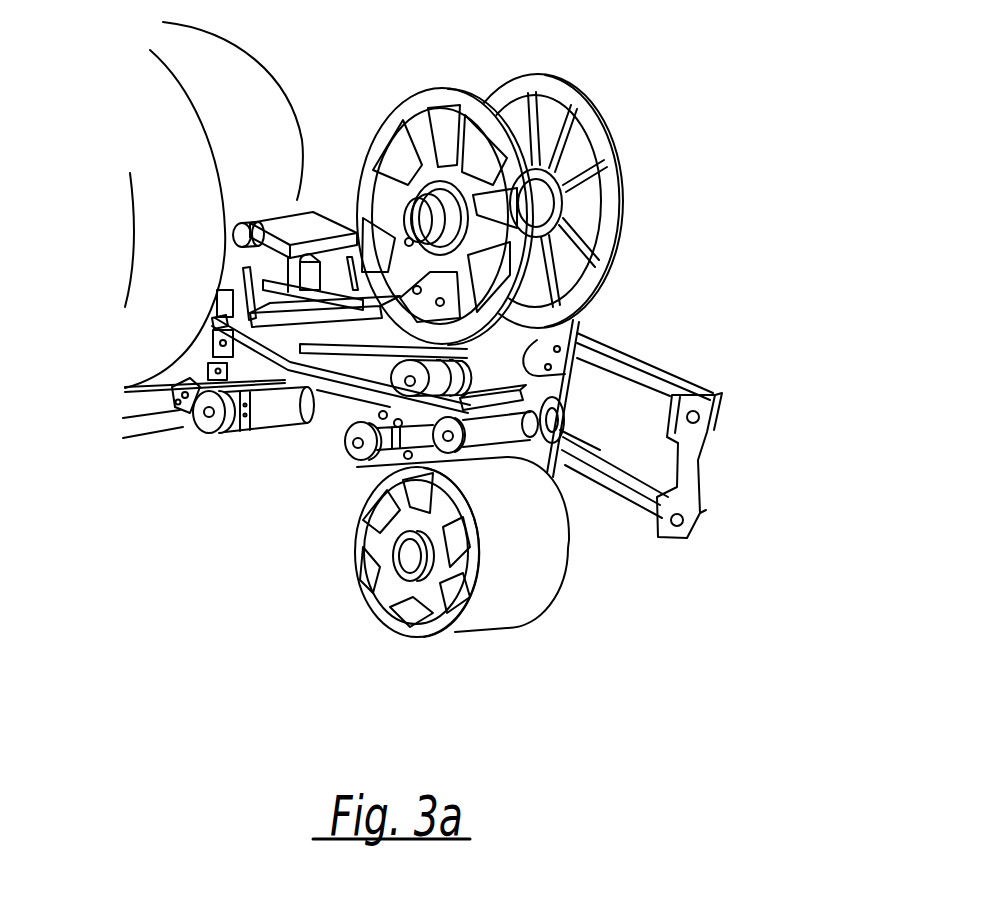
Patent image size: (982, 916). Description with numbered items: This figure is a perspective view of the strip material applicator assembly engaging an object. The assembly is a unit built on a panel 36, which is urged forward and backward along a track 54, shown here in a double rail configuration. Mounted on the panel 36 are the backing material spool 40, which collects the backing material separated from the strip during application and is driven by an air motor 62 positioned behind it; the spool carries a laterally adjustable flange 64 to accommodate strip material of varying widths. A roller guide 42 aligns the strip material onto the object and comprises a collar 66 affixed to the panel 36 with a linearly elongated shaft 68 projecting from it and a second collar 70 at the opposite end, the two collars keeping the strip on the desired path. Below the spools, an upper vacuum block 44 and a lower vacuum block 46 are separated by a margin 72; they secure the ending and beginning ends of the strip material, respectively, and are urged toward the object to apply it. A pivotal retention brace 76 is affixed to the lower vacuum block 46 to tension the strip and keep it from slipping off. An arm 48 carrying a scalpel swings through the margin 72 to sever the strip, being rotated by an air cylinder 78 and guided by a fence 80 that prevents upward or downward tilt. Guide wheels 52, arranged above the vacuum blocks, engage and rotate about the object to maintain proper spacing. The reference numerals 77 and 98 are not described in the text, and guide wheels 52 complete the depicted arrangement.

The panel 36 is at (562, 373).
The backing material spool 40 is at (505, 603).
The roller guide 42 is at (357, 440).
The upper vacuum block 44 is at (222, 307).
The lower vacuum block 46 is at (213, 342).
The arm 48 is at (347, 400).
The guide wheels 52 is at (233, 232).
The track 54 is at (713, 393).
The air motor 62 is at (405, 563).
The laterally adjustable flange 64 is at (540, 203).
The collar 66 is at (600, 440).
The shaft 68 is at (590, 463).
The second collar 70 is at (460, 456).
The margin 72 is at (217, 320).
The pivotal retention brace 76 is at (178, 407).
The stage 77 is at (347, 290).
The air cylinder 78 is at (488, 400).
The fence 80 is at (300, 360).
The hub 98 is at (383, 240).